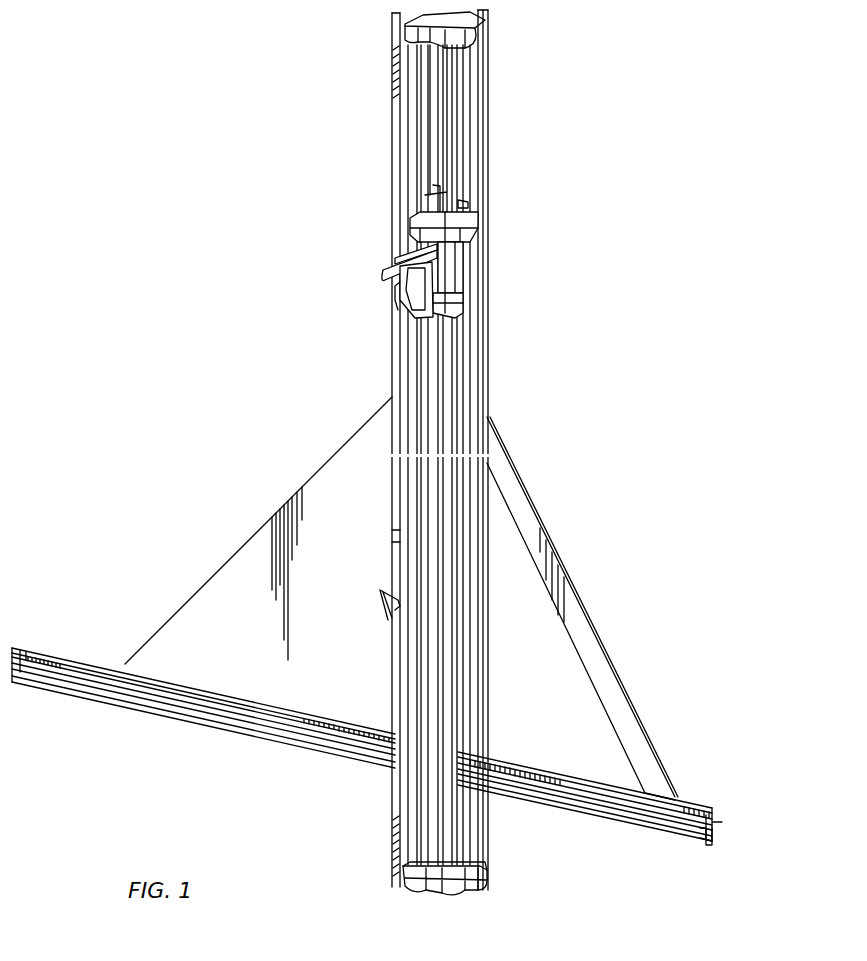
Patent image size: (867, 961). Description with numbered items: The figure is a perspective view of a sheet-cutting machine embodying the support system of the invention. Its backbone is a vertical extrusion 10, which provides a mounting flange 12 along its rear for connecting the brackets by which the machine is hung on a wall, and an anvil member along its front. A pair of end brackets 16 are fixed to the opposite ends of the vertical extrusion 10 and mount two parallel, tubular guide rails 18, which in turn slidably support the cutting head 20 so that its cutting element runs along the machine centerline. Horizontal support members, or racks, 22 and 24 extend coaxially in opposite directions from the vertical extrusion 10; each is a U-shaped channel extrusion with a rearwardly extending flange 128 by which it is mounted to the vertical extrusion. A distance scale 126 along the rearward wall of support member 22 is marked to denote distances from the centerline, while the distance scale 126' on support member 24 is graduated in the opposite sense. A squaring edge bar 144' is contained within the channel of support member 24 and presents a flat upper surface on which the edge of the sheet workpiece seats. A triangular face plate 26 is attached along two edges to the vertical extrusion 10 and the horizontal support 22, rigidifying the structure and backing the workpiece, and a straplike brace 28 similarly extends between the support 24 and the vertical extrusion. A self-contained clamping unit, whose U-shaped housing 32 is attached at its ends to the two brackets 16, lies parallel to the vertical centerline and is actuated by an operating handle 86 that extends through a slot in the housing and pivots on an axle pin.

The vertical extrusion 10 is at (493, 343).
The mounting flange 12 is at (480, 20).
The end brackets 16 is at (458, 42).
The tubular guide rails 18 is at (447, 142).
The cutting head 20 is at (405, 312).
The horizontal support member 22 is at (132, 716).
The horizontal support member 24 is at (632, 833).
The triangular face plate 26 is at (248, 565).
The straplike brace 28 is at (616, 714).
The U-shaped housing 32 is at (385, 535).
The operating handle 86 is at (382, 608).
The distance scale 126 is at (204, 667).
The distance scale 126' is at (589, 760).
The rearwardly extending flange 128 is at (722, 822).
The squaring edge bar 144' is at (706, 857).